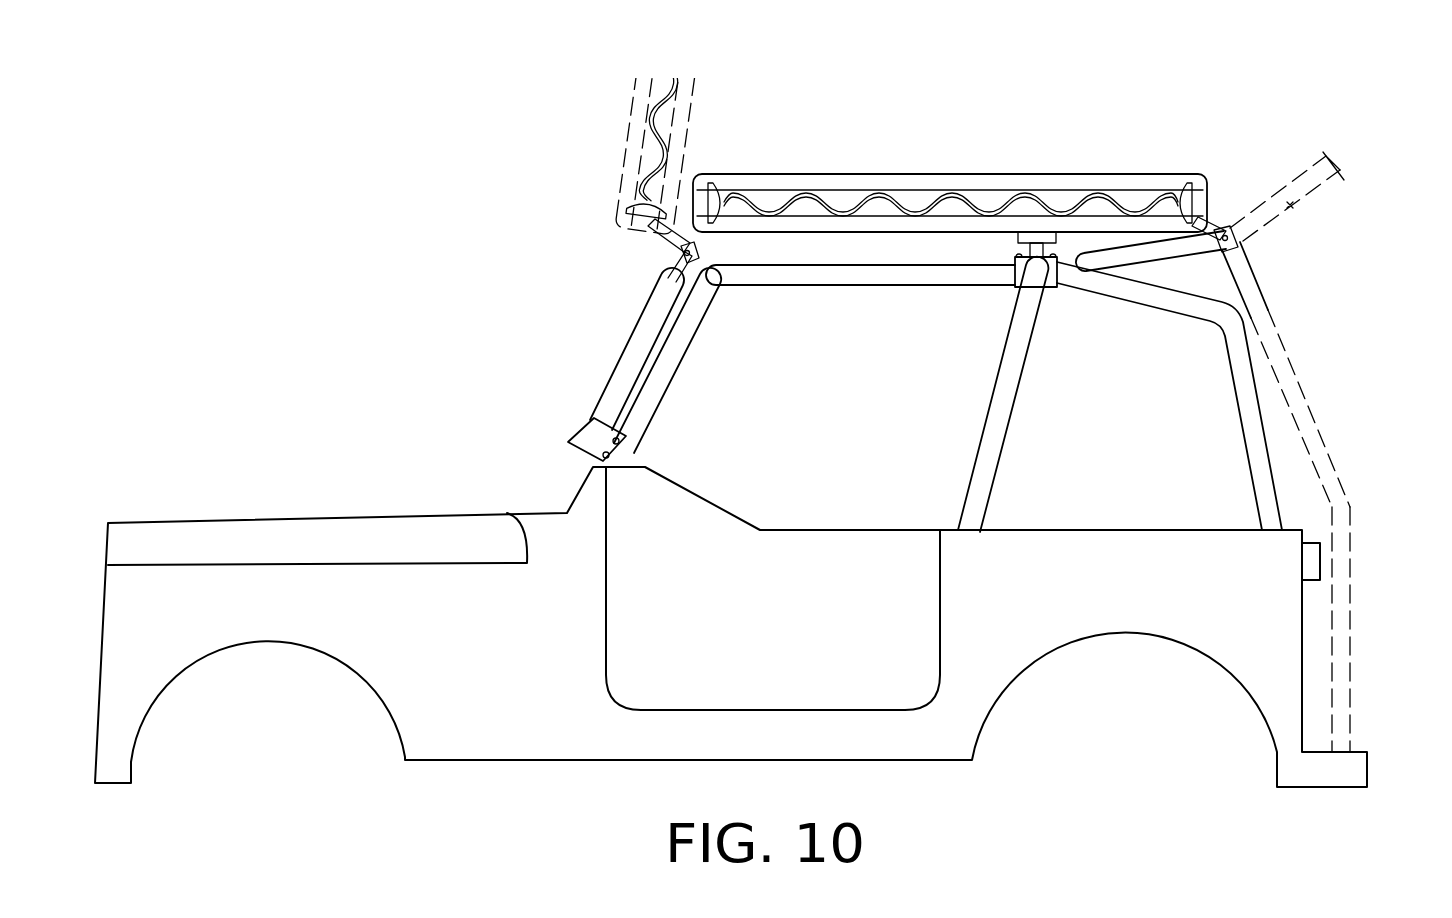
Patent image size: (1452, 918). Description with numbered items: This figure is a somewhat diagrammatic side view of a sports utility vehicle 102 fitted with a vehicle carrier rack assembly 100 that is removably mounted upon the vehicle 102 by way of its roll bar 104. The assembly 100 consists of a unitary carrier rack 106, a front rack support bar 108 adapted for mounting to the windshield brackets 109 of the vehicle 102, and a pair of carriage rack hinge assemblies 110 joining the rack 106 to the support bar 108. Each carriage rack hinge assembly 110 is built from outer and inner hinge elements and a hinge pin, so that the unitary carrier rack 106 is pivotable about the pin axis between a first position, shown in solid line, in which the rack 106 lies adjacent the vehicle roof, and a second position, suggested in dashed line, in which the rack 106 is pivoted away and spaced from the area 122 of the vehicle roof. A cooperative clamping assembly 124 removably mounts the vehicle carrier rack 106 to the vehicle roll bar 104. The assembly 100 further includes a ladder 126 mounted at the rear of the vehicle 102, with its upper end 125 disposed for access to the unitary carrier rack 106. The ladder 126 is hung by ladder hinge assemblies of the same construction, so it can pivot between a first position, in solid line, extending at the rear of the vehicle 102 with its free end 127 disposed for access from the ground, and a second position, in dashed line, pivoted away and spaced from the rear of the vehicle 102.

The vehicle carrier rack assembly 100 is at (1230, 142).
The vehicle 102 is at (1088, 586).
The roll bar 104 is at (948, 381).
The unitary carrier rack 106 is at (623, 150).
The front rack support bar 108 is at (623, 355).
The windshield brackets 109 is at (622, 453).
The carriage rack hinge assemblies 110 is at (678, 261).
The area of the vehicle roof 122 is at (862, 247).
The cooperative clamping assembly 124 is at (1062, 264).
The upper end of the ladder 125 is at (1251, 264).
The ladder 126 is at (1300, 212).
The free end of the ladder 127 is at (1350, 670).